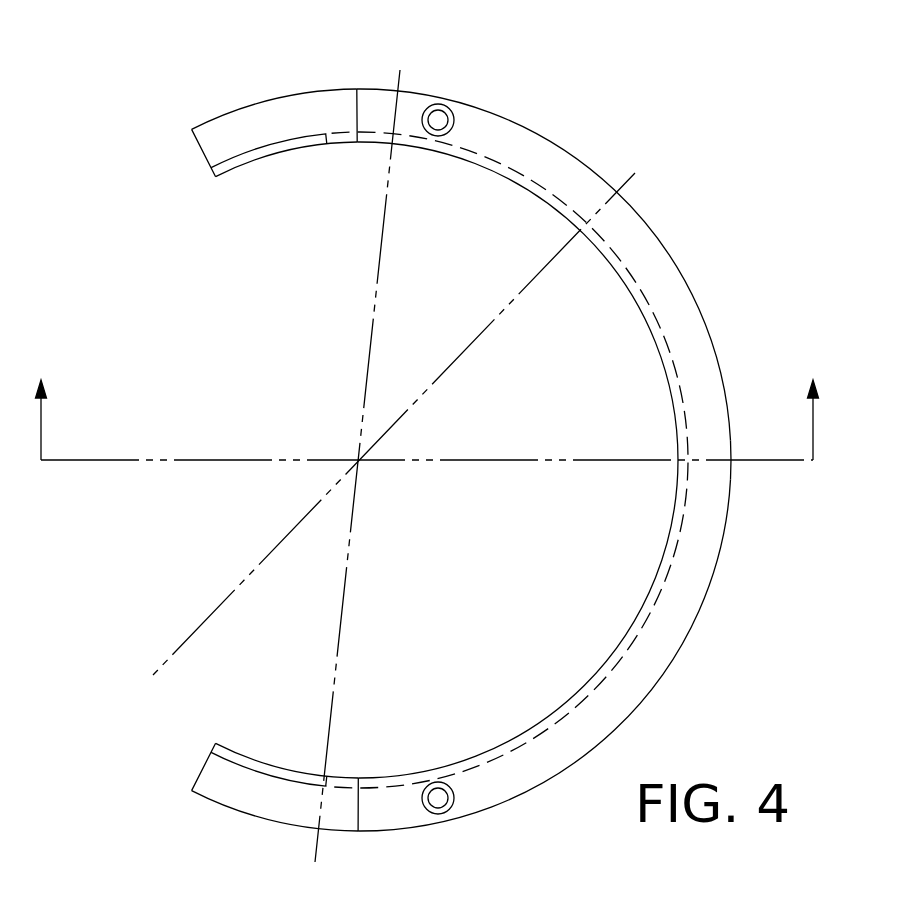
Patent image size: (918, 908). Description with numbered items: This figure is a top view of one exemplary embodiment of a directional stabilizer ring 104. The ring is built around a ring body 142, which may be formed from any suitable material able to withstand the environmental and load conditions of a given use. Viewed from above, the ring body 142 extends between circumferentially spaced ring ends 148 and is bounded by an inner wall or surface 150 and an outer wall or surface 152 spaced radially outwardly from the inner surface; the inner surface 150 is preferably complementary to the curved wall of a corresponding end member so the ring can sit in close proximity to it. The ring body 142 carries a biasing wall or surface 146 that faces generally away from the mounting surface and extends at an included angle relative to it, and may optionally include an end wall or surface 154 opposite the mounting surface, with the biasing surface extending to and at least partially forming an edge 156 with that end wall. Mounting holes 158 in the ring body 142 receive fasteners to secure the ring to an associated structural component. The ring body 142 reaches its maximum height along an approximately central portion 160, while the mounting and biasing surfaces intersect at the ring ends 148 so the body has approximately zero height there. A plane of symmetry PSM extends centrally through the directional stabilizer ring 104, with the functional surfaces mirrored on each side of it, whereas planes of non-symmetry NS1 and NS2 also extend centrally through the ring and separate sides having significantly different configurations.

The directional stabilizer ring 104 is at (678, 163).
The ring body 142 is at (559, 159).
The biasing wall or surface 146 is at (249, 116).
The ring ends 148 is at (204, 153).
The inner wall or surface 150 is at (258, 156).
The outer wall or surface 152 is at (662, 242).
The end wall or surface 154 is at (663, 642).
The edge 156 is at (358, 108).
The mounting holes 158 is at (452, 109).
The central portion 160 is at (714, 480).
The plane of non-symmetry NS1 is at (535, 268).
The plane of non-symmetry NS2 is at (378, 262).
The plane of symmetry PSM is at (583, 458).